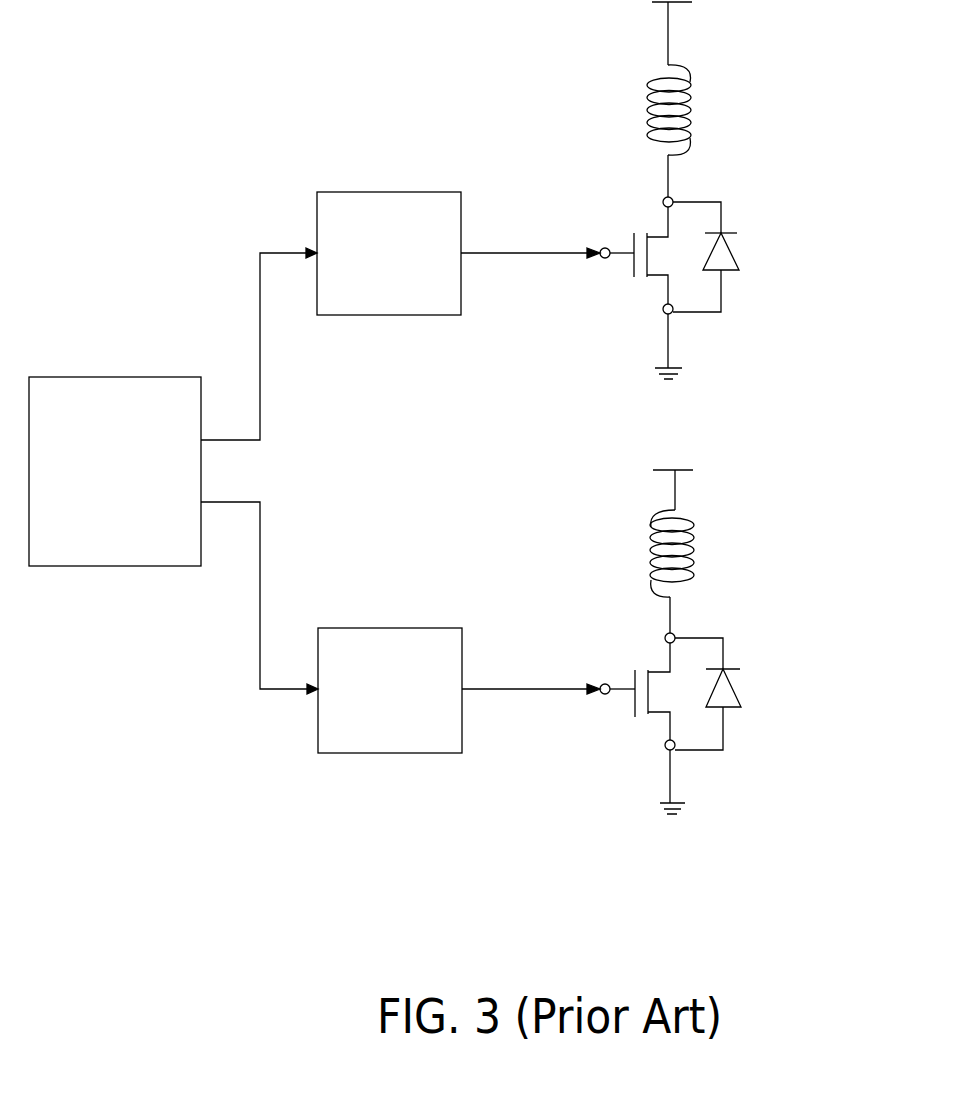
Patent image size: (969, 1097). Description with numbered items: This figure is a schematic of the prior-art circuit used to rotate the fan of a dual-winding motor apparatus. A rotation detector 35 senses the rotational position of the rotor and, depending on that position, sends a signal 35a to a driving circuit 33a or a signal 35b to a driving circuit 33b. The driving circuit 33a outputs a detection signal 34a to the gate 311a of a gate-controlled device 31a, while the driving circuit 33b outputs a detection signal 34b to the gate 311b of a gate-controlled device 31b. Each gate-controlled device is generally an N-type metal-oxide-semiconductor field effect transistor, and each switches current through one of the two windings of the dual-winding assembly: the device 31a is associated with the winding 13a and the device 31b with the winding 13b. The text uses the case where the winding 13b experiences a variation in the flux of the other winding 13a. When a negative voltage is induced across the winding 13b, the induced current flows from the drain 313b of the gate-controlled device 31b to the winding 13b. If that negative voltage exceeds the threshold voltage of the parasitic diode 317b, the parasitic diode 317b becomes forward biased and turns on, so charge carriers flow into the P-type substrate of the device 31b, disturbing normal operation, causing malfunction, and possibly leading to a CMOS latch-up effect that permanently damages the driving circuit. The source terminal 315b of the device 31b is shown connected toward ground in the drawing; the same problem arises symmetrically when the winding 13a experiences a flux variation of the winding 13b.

The rotation detector 35 is at (113, 547).
The signal 35a is at (272, 339).
The signal 35b is at (265, 578).
The driving circuit 33a is at (413, 288).
The driving circuit 33b is at (398, 738).
The detection signal 34a is at (535, 240).
The detection signal 34b is at (532, 683).
The gate 311a is at (605, 248).
The gate 311b is at (605, 684).
The gate-controlled device 31a is at (633, 263).
The gate-controlled device 31b is at (628, 703).
The winding 13a is at (693, 95).
The winding 13b is at (695, 525).
The drain 313b is at (663, 638).
The parasitic diode 317b is at (723, 688).
The source terminal of second transistor 315b is at (677, 752).